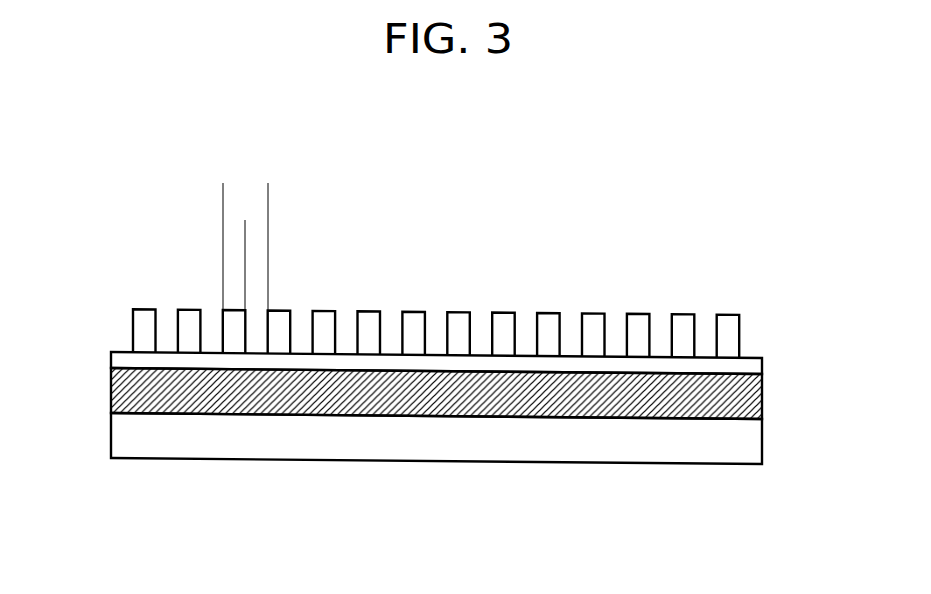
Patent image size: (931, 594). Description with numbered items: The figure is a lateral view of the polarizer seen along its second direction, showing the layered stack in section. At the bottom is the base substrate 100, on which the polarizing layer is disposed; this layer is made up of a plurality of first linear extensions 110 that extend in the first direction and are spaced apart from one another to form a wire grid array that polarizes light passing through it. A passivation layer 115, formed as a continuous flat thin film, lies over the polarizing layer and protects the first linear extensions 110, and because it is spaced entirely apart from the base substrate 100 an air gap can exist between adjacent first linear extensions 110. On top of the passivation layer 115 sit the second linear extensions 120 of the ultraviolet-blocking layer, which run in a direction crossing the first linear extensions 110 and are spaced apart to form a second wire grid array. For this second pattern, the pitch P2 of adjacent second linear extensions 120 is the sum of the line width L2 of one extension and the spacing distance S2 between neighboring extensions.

The base substrate 100 is at (113, 435).
The first linear extensions 110 is at (760, 391).
The passivation layer 115 is at (113, 358).
The second linear extensions 120 is at (733, 333).
The pitch P2 is at (268, 190).
The line width L2 is at (245, 227).
The spacing distance S2 is at (245, 227).